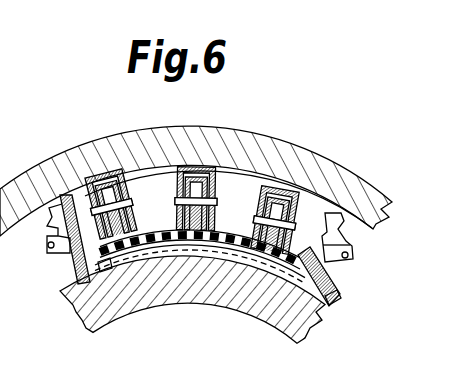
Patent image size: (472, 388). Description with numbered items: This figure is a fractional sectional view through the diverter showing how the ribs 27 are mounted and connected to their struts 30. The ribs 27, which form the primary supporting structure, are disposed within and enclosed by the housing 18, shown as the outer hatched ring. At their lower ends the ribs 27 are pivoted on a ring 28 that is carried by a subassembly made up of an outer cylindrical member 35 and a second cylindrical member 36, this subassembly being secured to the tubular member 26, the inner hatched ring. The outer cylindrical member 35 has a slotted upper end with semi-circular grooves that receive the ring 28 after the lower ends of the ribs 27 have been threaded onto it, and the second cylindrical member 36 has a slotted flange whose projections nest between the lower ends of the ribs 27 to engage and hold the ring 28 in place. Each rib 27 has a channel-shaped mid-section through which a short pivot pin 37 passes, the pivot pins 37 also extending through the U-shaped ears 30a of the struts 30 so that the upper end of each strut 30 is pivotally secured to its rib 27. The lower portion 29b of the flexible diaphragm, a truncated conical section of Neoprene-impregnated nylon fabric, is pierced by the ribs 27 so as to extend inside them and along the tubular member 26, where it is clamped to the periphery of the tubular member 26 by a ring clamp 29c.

The housing 18 is at (303, 147).
The tubular member 26 is at (248, 312).
The ribs 27 is at (77, 253).
The ring 28 is at (348, 258).
The lower portion of diaphragm 29b is at (192, 232).
The ring clamp 29c is at (110, 278).
The strut 30 is at (101, 185).
The U-shaped ears 30a is at (178, 220).
The outer cylindrical member 35 is at (340, 220).
The second cylindrical member 36 is at (333, 295).
The pivot pins 37 is at (135, 204).